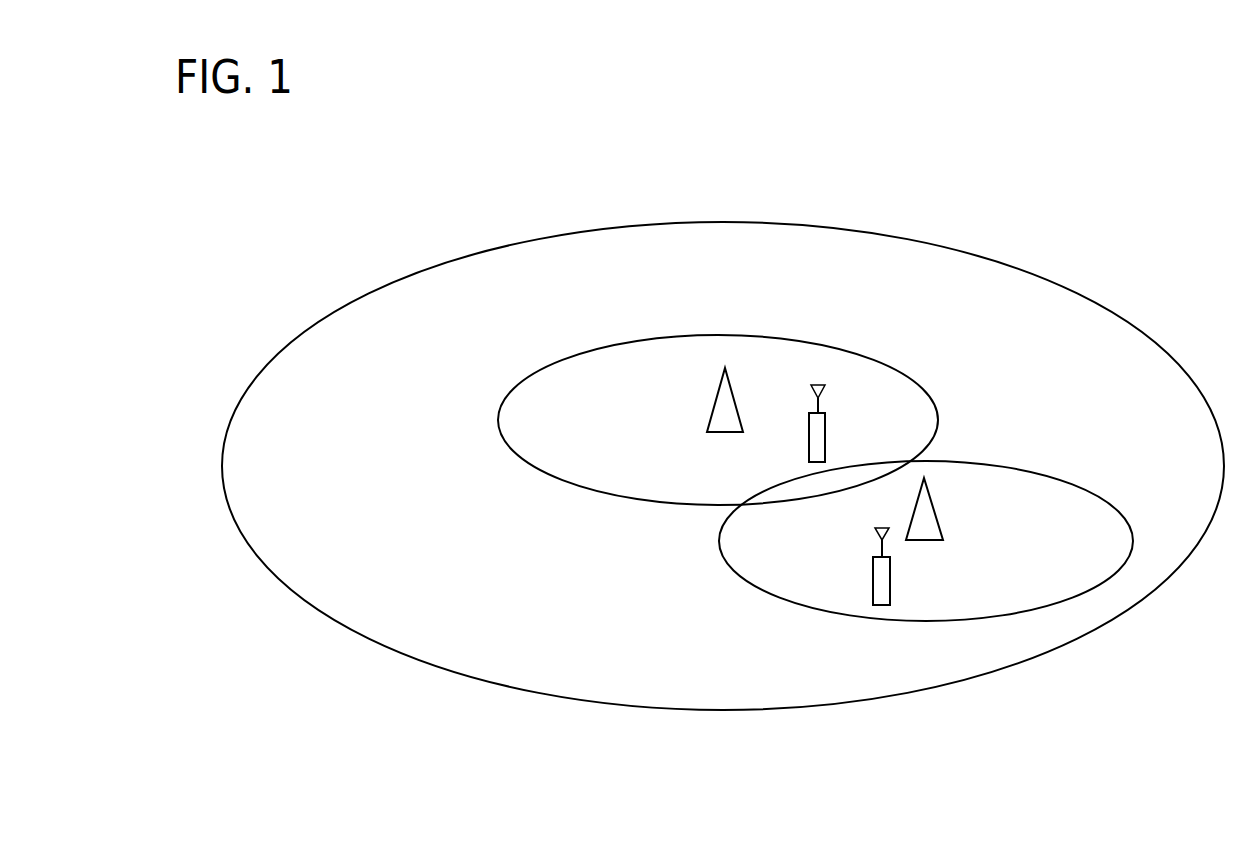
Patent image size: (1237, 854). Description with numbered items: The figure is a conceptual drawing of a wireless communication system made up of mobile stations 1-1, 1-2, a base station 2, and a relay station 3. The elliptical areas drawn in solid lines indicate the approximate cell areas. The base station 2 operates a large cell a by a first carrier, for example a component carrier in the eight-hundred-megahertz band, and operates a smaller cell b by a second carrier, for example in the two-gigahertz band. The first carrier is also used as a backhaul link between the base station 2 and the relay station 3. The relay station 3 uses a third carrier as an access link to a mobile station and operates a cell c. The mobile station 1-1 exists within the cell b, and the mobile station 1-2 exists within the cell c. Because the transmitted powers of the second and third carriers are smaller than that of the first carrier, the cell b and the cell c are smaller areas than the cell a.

The cell a is at (588, 703).
The cell b is at (587, 490).
The cell c is at (790, 603).
The base station device 2 is at (733, 392).
The relay station device 3 is at (932, 500).
The mobile communication terminal 1-1 is at (826, 437).
The mobile communication terminal 1-2 is at (891, 576).